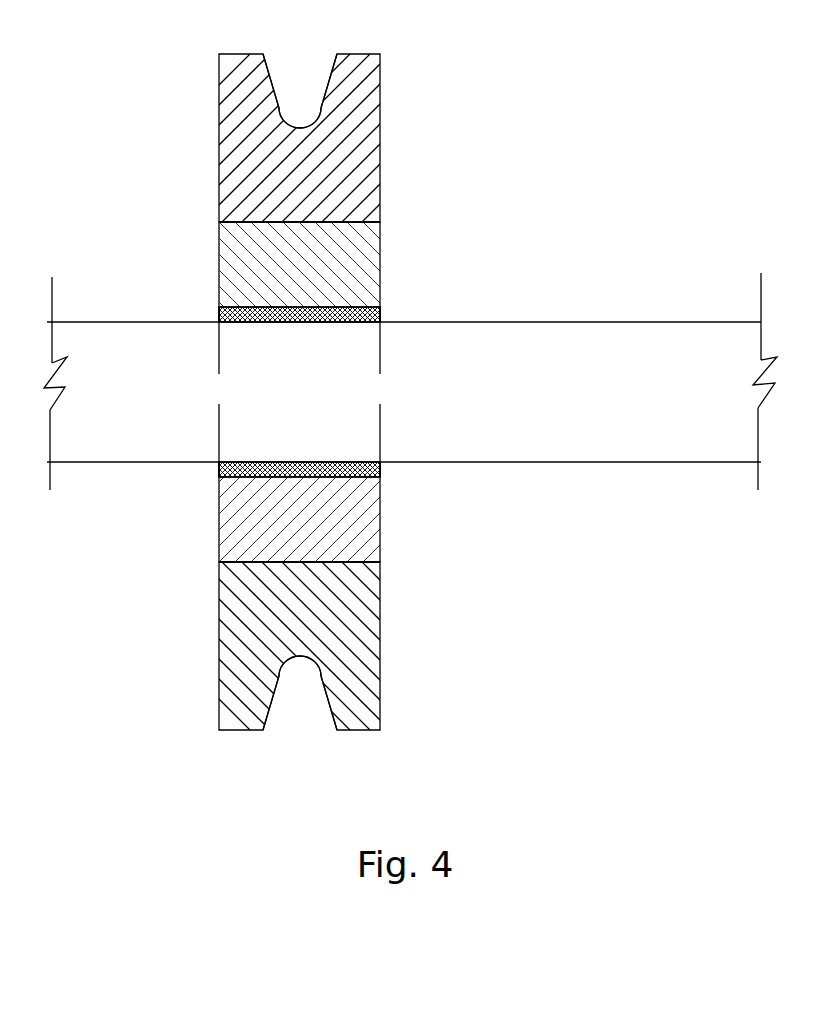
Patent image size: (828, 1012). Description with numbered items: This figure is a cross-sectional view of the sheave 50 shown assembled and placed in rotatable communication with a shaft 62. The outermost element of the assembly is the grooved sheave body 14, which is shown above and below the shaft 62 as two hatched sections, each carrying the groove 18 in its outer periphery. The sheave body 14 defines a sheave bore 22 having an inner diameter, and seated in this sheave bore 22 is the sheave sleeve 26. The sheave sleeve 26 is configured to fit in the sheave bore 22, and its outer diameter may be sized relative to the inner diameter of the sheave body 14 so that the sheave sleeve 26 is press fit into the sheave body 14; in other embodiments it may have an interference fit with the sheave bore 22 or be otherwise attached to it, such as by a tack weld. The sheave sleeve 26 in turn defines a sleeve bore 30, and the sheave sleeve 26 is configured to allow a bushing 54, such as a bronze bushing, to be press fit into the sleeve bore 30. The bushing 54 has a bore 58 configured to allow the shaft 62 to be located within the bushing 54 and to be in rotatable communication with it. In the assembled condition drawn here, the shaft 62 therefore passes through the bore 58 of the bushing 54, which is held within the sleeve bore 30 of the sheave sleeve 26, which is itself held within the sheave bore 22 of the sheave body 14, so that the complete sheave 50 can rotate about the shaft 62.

The sheave body 14 is at (235, 108).
The groove 18 is at (267, 70).
The sheave bore 22 is at (222, 222).
The sheave sleeve 26 is at (237, 255).
The sleeve bore 30 is at (218, 308).
The sheave 50 is at (547, 178).
The bushing 54 is at (213, 319).
The bore 58 is at (382, 320).
The shaft 62 is at (665, 343).